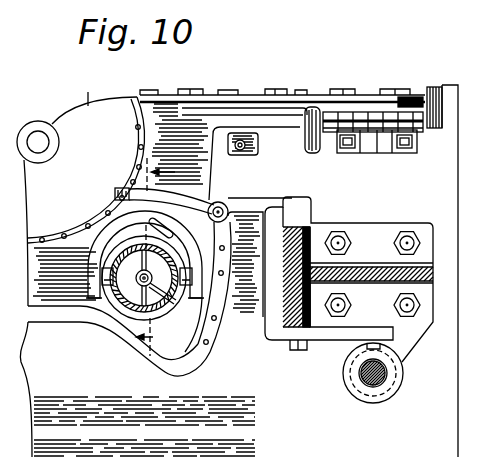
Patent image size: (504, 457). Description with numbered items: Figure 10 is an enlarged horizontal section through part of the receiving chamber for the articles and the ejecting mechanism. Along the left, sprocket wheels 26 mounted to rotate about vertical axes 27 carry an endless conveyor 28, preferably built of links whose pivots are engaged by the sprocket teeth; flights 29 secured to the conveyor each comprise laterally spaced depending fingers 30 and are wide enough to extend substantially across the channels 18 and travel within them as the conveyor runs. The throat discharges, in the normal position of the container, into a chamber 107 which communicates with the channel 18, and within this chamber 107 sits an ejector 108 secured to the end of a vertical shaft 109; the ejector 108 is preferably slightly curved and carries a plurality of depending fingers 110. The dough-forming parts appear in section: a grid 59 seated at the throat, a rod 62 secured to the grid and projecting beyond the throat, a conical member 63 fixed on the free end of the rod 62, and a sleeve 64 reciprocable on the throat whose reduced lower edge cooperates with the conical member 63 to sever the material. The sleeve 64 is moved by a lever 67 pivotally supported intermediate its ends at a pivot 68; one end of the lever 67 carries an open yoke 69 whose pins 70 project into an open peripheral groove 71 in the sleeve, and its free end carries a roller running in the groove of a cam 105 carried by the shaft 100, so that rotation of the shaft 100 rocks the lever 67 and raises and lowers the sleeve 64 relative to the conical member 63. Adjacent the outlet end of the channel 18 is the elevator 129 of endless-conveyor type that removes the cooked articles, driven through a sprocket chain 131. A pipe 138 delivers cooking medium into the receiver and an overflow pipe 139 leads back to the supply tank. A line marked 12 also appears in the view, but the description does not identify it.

The axis line 12 is at (167, 257).
The channels 18 is at (47, 309).
The sprocket wheels 26 is at (73, 93).
The vertical axes 27 is at (38, 131).
The endless conveyor 28 is at (143, 128).
The flights 29 is at (117, 190).
The depending fingers 30 is at (115, 192).
The grid 59 is at (143, 263).
The rod 62 is at (152, 287).
The conical member 63 is at (118, 293).
The sleeve 64 is at (133, 320).
The lever 67 is at (328, 333).
The pivot 68 is at (291, 351).
The open yoke 69 is at (108, 229).
The pins 70 is at (193, 278).
The open peripheral groove 71 is at (125, 292).
The shaft 100 is at (385, 380).
The cam 105 is at (399, 373).
The chamber 107 is at (168, 350).
The ejector 108 is at (198, 363).
The vertical shaft 109 is at (320, 163).
The depending fingers 110 is at (225, 256).
The elevator 129 is at (293, 96).
The sprocket chain 131 is at (417, 128).
The pipe 138 is at (318, 153).
The overflow pipe 139 is at (246, 145).